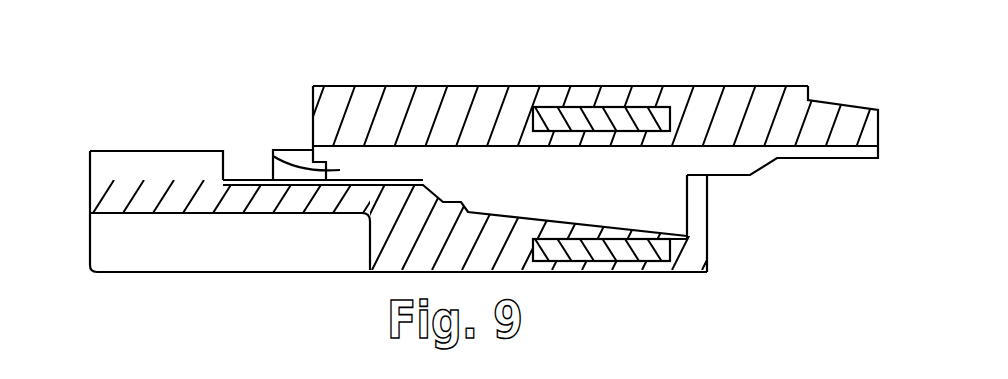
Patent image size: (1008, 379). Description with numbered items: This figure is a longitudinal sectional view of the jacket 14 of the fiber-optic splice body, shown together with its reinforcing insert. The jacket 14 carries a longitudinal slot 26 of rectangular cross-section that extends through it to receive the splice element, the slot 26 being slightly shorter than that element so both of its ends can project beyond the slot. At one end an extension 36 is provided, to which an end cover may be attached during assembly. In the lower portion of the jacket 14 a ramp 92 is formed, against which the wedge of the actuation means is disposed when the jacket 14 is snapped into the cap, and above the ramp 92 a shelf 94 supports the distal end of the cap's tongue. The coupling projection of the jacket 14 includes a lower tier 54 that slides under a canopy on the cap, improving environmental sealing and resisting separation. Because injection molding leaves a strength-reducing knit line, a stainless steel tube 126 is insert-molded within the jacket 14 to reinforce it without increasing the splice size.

The jacket 14 is at (500, 85).
The longitudinal slot 26 is at (273, 158).
The extension 36 is at (88, 193).
The lower tier 54 is at (840, 103).
The ramp 92 is at (607, 226).
The shelf 94 is at (443, 200).
The stainless steel tube 126 is at (648, 112).